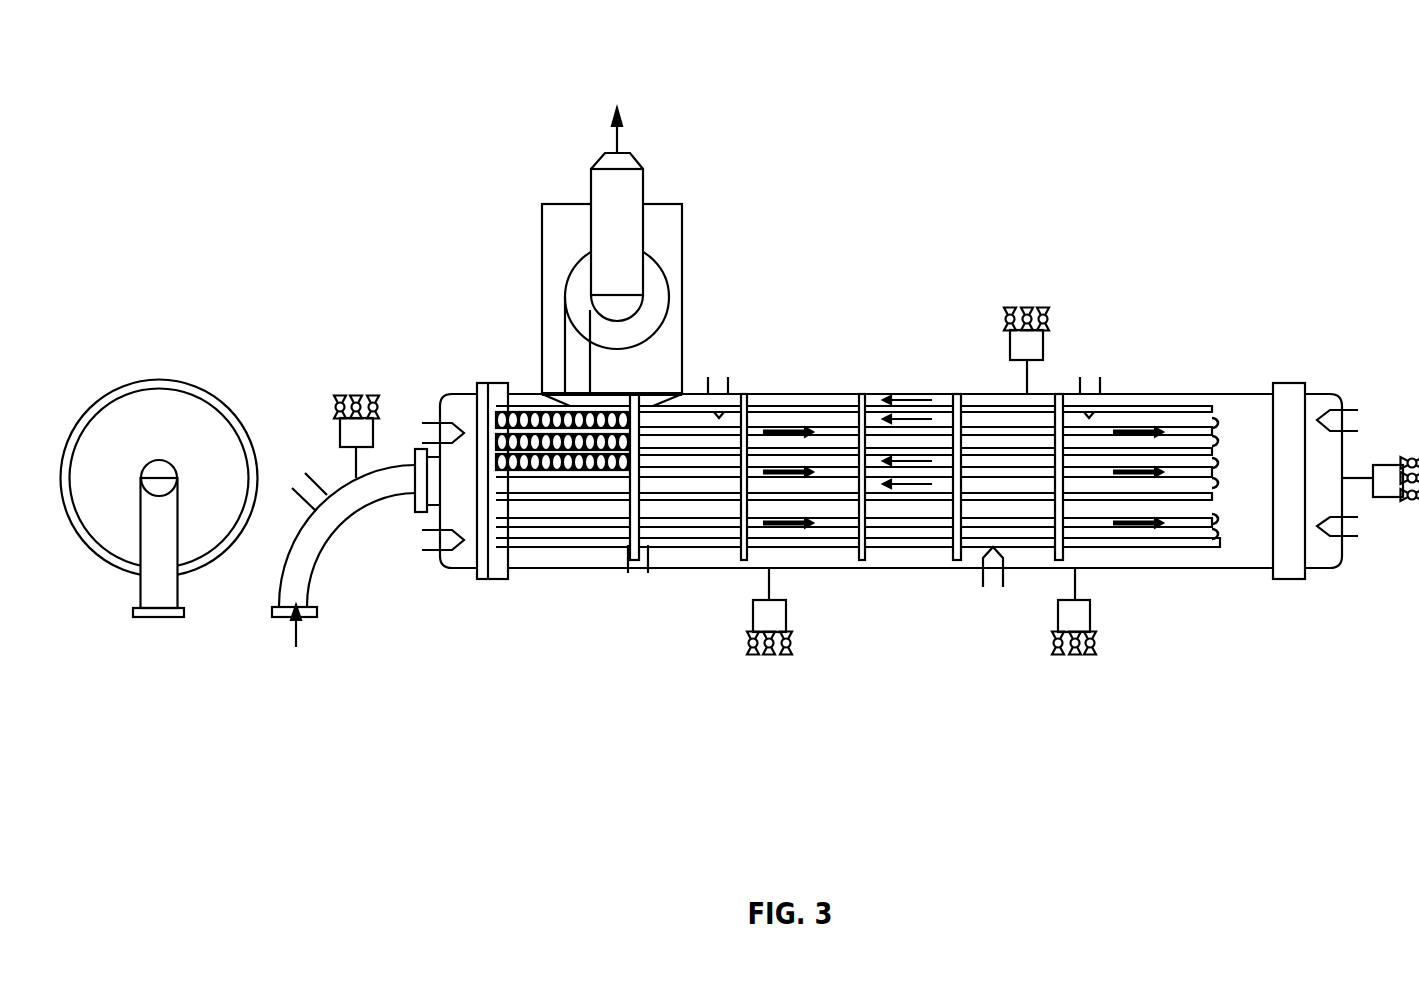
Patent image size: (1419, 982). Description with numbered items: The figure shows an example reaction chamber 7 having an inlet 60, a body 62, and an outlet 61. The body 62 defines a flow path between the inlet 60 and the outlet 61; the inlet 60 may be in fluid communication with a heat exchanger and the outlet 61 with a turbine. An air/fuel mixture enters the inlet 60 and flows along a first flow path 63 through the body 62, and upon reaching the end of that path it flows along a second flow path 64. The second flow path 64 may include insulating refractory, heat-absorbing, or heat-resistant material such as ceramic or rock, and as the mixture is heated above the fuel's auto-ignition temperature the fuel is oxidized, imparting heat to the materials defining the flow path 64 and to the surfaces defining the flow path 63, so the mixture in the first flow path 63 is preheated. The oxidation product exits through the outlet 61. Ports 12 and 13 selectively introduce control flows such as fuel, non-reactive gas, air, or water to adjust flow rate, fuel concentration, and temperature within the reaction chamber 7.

The reaction chamber 7 is at (265, 100).
The port 12 is at (340, 395).
The port 13 is at (356, 395).
The inlet 60 is at (296, 632).
The outlet 61 is at (617, 137).
The body 62 is at (1170, 394).
The first flow path 63 is at (943, 410).
The second flow path 64 is at (760, 403).